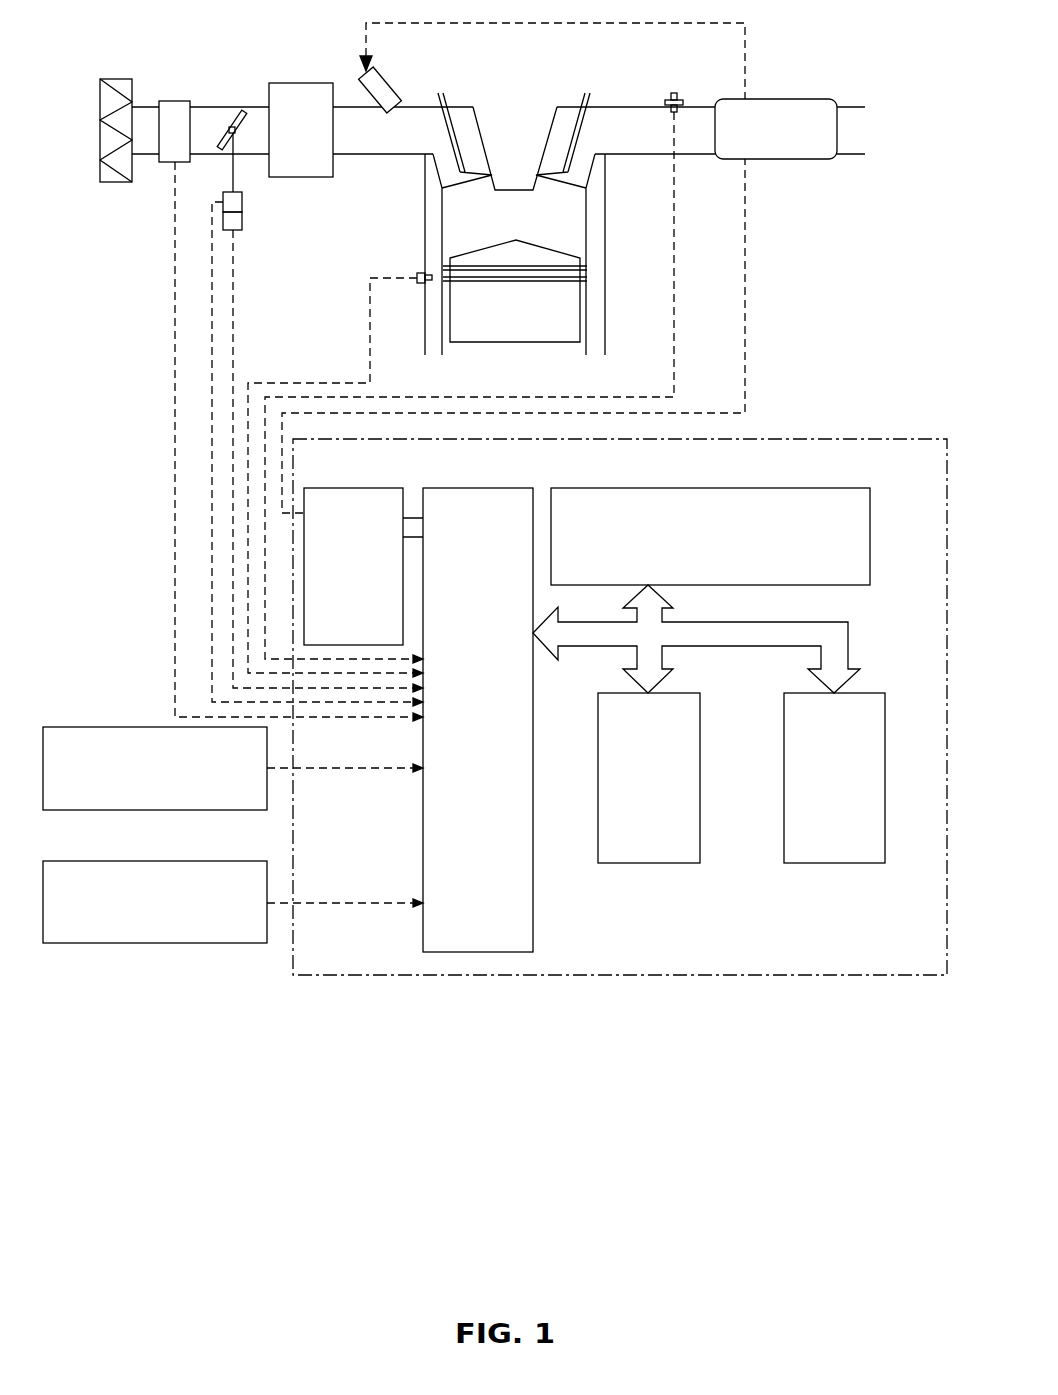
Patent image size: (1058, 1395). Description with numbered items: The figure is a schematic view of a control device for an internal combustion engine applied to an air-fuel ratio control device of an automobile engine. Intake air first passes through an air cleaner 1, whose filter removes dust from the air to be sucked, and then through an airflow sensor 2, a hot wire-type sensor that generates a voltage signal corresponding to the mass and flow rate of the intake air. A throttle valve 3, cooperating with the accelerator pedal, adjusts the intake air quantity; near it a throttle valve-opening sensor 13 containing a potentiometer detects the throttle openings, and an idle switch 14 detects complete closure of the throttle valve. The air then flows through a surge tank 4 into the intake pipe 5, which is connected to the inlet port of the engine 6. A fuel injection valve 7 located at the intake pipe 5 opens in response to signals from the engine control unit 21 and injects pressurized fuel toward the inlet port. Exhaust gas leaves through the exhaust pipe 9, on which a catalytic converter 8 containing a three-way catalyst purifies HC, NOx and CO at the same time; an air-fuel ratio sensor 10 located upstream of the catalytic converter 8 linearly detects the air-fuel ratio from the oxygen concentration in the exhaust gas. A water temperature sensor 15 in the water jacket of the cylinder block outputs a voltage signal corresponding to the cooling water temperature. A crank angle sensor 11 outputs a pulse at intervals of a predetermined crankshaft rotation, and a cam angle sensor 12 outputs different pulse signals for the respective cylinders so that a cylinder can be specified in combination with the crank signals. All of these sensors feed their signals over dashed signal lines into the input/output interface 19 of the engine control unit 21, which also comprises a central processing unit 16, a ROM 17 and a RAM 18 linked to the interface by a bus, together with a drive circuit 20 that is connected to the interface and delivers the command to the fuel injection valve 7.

The air cleaner 1 is at (117, 80).
The airflow sensor 2 is at (172, 101).
The throttle valve 3 is at (229, 107).
The surge tank 4 is at (296, 83).
The intake pipe 5 is at (348, 155).
The engine 6 is at (606, 212).
The fuel injection valve 7 is at (392, 73).
The catalytic converter 8 is at (788, 99).
The exhaust pipe 9 is at (685, 154).
The air-fuel ratio sensor 10 is at (665, 100).
The crank angle sensor 11 is at (143, 861).
The cam angle sensor 12 is at (143, 727).
The throttle valve-opening sensor 13 is at (242, 203).
The idle switch 14 is at (242, 218).
The water temperature sensor 15 is at (417, 275).
The central processing unit 16 is at (870, 518).
The ROM 17 is at (840, 863).
The RAM 18 is at (662, 863).
The input/output interface 19 is at (455, 488).
The drive circuit 20 is at (323, 488).
The engine control unit 21 is at (443, 975).